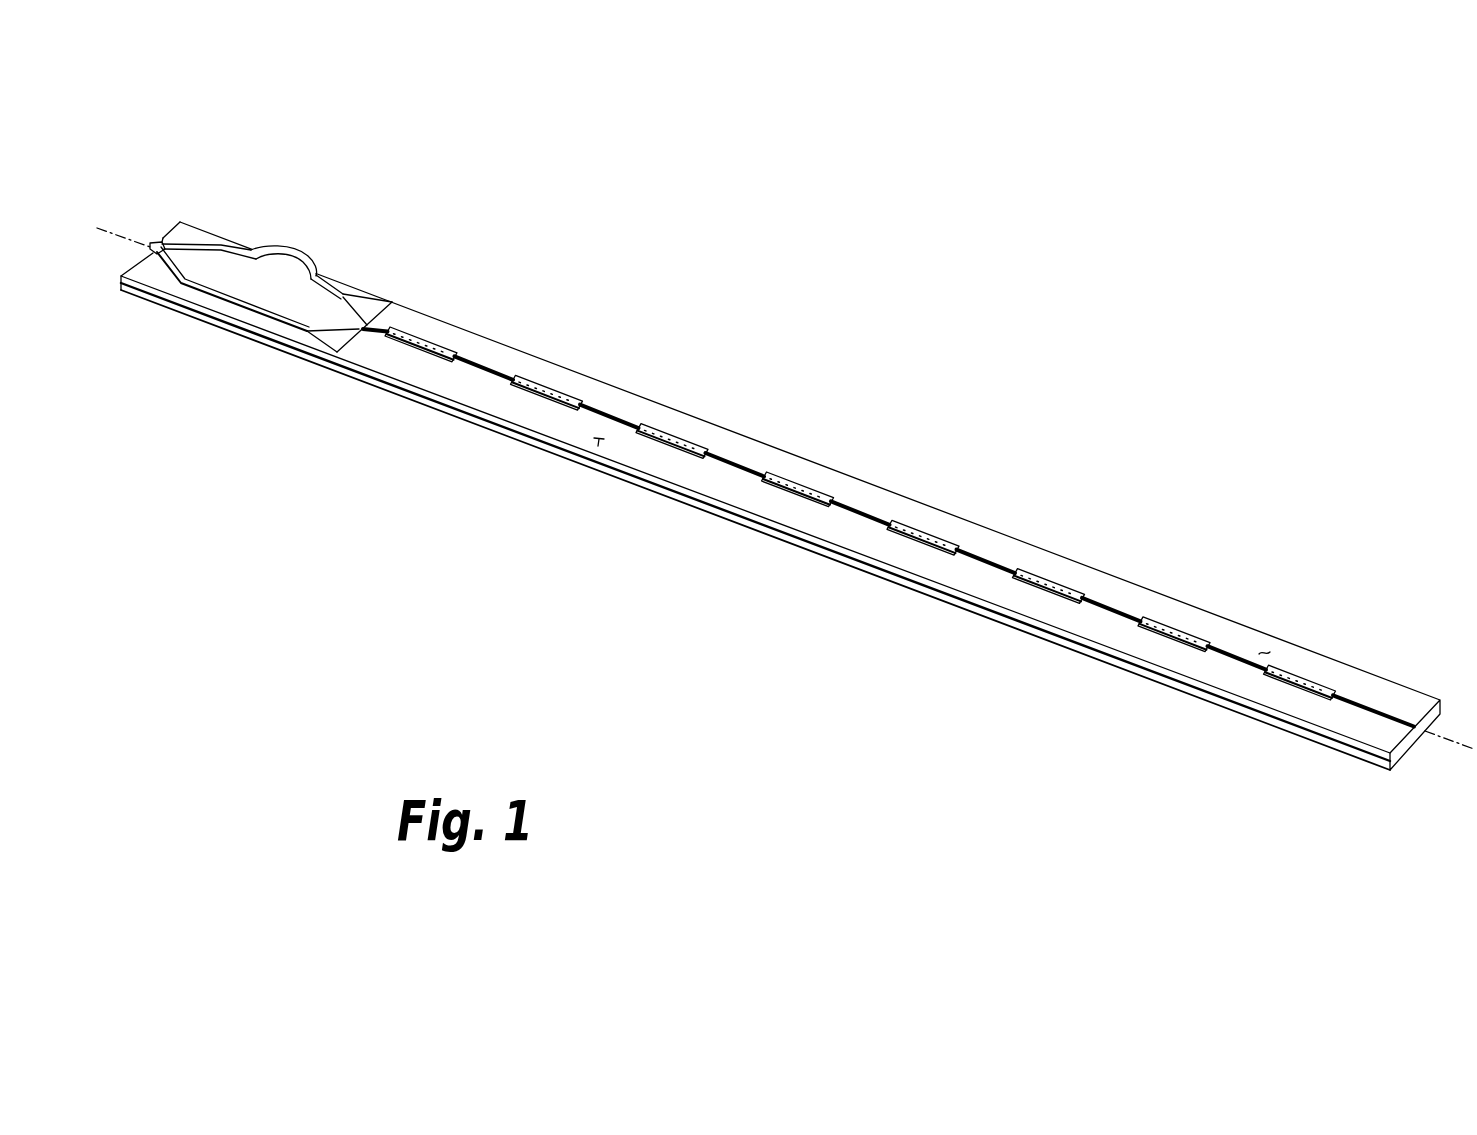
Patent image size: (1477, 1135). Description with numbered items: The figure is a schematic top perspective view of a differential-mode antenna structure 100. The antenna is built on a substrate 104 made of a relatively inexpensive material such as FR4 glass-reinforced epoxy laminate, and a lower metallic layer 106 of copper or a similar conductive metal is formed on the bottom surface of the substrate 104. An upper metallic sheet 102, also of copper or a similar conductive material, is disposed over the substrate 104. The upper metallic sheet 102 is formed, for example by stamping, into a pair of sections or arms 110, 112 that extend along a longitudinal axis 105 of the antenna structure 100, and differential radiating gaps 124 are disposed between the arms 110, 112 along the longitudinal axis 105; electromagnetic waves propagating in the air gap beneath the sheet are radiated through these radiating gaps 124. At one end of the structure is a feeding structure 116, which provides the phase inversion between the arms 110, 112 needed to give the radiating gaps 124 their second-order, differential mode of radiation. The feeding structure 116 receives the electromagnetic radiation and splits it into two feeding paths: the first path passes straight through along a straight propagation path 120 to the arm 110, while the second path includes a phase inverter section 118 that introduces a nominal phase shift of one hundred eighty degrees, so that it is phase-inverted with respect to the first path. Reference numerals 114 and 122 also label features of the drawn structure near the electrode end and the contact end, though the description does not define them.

The differential-mode antenna structure 100 is at (880, 360).
The upper metallic sheet 102 is at (605, 378).
The substrate 104 is at (1225, 703).
The longitudinal axis 105 is at (128, 224).
The lower metallic layer 106 is at (1372, 764).
The arm 110 is at (598, 446).
The arm 112 is at (1268, 651).
The electrode end 114 is at (1363, 707).
The feeding structure 116 is at (318, 257).
The phase inverter section 118 is at (292, 250).
The straight propagation path 120 is at (242, 308).
The upper conductive trace 122 is at (178, 226).
The differential radiating gaps 124 is at (483, 366).